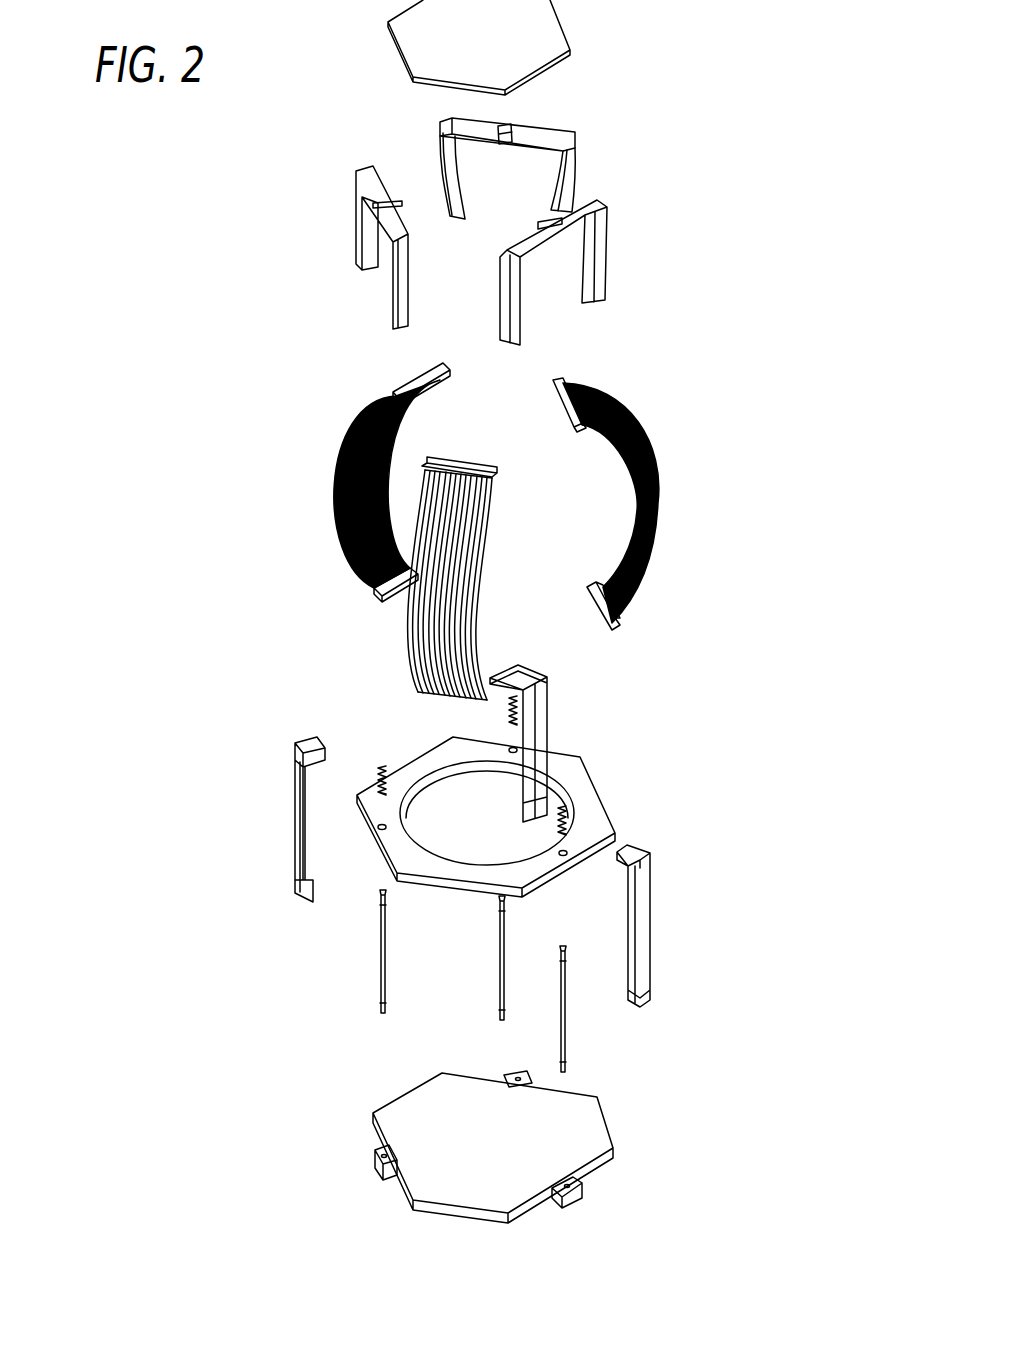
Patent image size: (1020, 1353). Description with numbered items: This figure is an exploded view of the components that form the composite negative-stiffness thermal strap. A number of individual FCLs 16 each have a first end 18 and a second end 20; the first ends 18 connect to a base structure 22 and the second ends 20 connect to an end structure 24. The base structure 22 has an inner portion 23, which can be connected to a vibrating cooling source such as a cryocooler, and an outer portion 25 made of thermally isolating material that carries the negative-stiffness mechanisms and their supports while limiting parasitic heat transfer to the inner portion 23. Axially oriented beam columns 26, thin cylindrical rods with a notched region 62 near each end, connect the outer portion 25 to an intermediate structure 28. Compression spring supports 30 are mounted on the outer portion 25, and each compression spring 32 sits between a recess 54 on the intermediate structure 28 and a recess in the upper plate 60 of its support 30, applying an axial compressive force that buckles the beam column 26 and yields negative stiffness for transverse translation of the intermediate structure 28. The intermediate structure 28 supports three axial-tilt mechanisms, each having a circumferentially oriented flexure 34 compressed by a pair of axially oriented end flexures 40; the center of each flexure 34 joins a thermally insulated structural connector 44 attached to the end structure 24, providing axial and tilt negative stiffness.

The flexible conductive link (FCL) 16 is at (342, 446).
The first end 18 is at (377, 596).
The second end 20 is at (445, 372).
The base structure 22 is at (456, 1147).
The inner portion 23 is at (572, 1120).
The end structure 24 is at (479, 47).
The outer portion 25 is at (578, 1186).
The beam column 26 is at (380, 951).
The intermediate structure 28 is at (595, 812).
The compression spring support 30 is at (297, 832).
The compression spring 32 is at (382, 766).
The circumferentially-oriented flexure 34 is at (530, 136).
The axially oriented end flexure 40 is at (432, 160).
The thermally insulated structural connector 44 is at (498, 160).
The recess 54 is at (516, 749).
The upper plate 60 is at (535, 673).
The notched region 62 is at (505, 905).